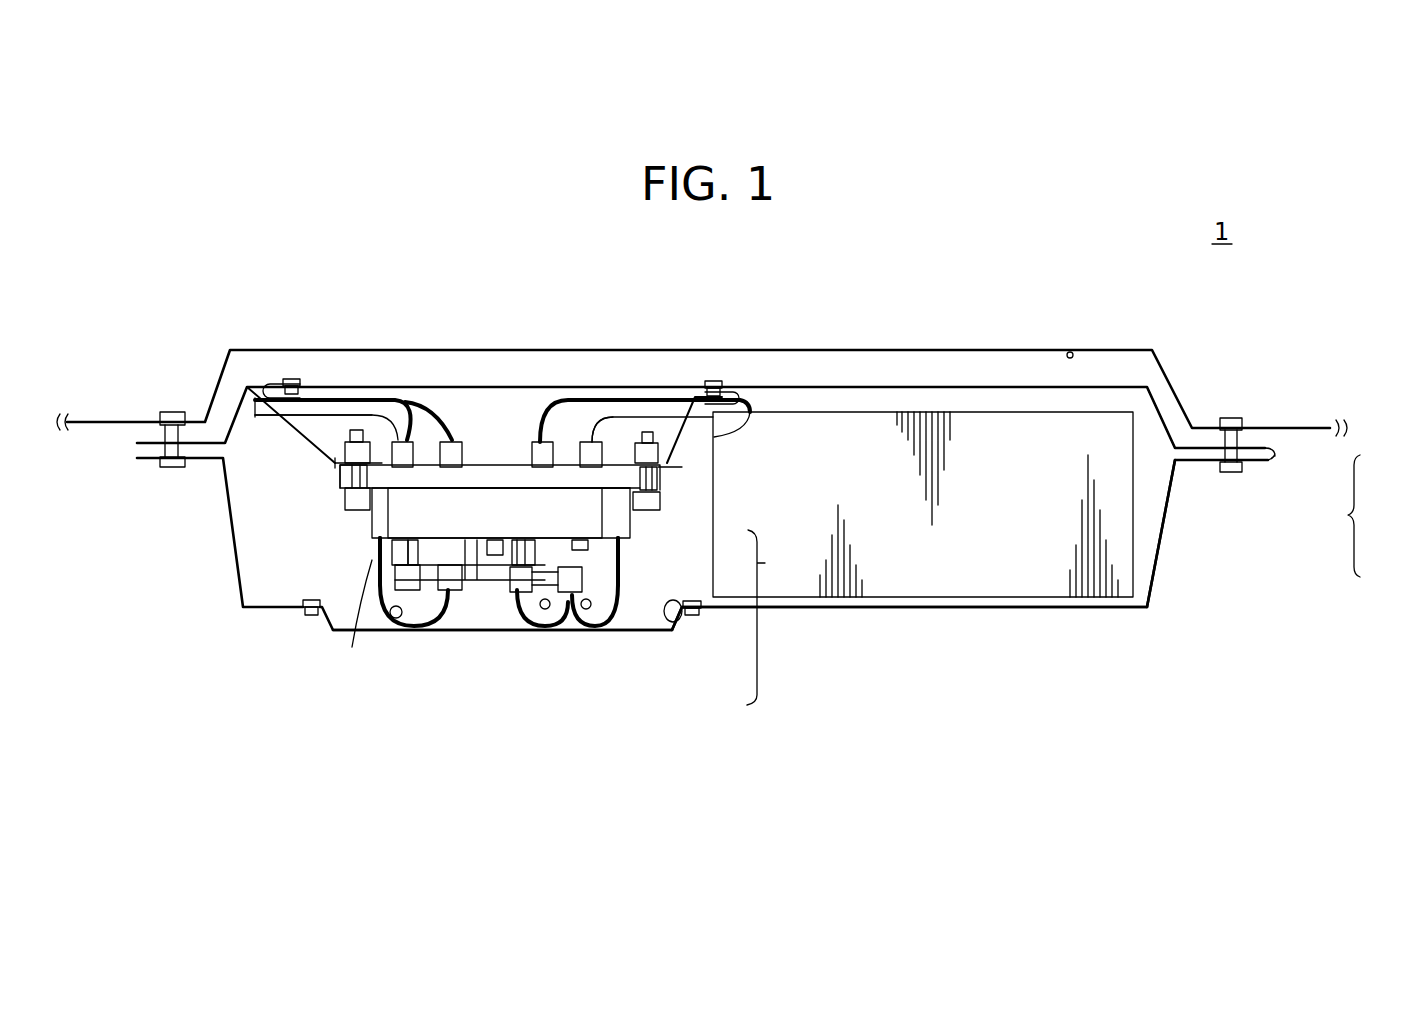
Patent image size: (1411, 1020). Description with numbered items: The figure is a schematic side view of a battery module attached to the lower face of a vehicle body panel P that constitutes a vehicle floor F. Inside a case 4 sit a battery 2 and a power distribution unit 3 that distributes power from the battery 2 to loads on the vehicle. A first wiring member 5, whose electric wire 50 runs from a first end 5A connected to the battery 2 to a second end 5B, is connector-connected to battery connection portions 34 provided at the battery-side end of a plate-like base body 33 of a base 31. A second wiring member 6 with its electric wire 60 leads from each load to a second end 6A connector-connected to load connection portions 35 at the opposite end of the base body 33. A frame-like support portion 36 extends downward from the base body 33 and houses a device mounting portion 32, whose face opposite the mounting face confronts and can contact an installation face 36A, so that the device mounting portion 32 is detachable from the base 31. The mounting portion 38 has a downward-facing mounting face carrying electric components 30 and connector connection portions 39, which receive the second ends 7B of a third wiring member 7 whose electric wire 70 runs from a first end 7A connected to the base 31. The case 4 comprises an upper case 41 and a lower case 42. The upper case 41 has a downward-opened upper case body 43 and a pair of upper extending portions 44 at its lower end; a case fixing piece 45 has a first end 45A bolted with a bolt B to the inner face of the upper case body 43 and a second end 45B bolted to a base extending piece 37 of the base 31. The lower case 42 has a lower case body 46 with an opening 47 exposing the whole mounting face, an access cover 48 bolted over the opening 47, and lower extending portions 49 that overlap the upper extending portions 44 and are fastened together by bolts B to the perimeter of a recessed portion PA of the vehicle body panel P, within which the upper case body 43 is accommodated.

The battery 2 is at (1052, 518).
The power distribution unit 3 is at (764, 617).
The case 4 is at (1365, 516).
The first wiring member 5 is at (648, 396).
The first end 5A is at (752, 408).
The second end 5B is at (573, 398).
The second wiring member 6 is at (356, 398).
The second end 6A is at (418, 398).
The third wiring member 7 is at (435, 626).
The first end 7A is at (380, 590).
The second end 7B is at (410, 592).
The electric components 30 is at (440, 545).
The base 31 is at (630, 540).
The device mounting portion 32 is at (625, 630).
The base body 33 is at (498, 478).
The battery connection portion 34 is at (540, 455).
The load connection portion 35 is at (402, 455).
The support portion 36 is at (633, 517).
The installation face 36A is at (660, 507).
The base extending piece 37 is at (343, 478).
The mounting portion 38 is at (572, 576).
The connector connection portion 39 is at (525, 560).
The upper case 41 is at (1270, 452).
The lower case 42 is at (1250, 468).
The upper case body 43 is at (1118, 380).
The upper extending portion 44 is at (140, 443).
The case fixing piece 45 is at (320, 446).
The first end 45A is at (268, 390).
The second end 45B is at (335, 463).
The lower case body 46 is at (1163, 528).
The opening 47 is at (676, 622).
The access cover 48 is at (620, 632).
The lower extending portion 49 is at (143, 458).
The electric wire 50 is at (624, 398).
The electric wire 60 is at (340, 415).
The electric wire 70 is at (397, 618).
The bolt B is at (170, 412).
The vehicle floor F is at (1238, 368).
The vehicle body panel P is at (1310, 430).
The recessed portion PA is at (1072, 352).